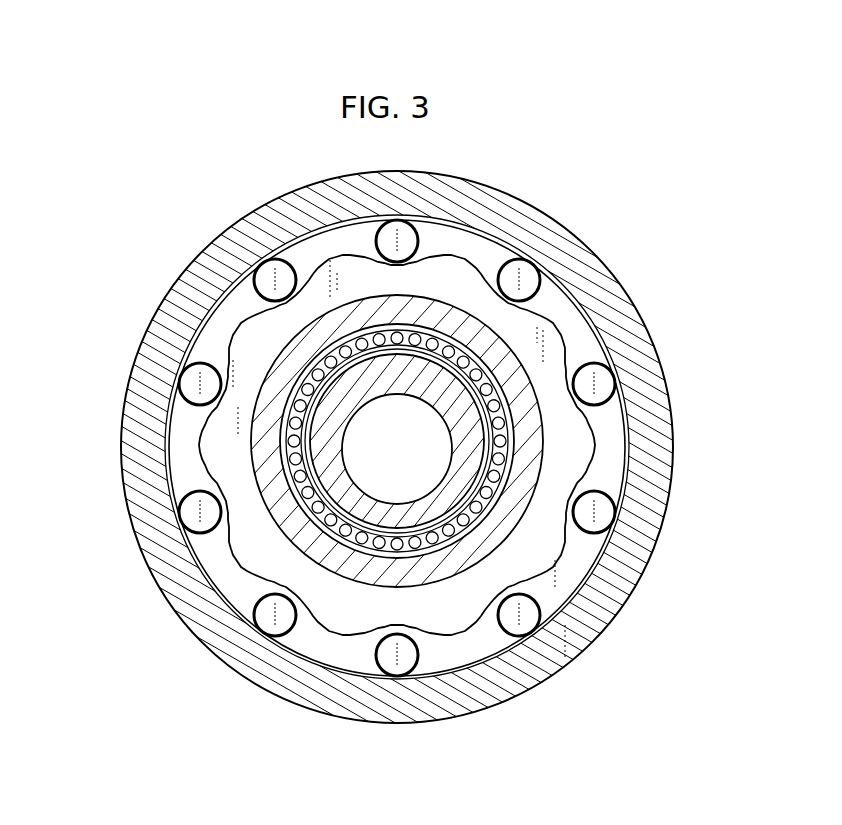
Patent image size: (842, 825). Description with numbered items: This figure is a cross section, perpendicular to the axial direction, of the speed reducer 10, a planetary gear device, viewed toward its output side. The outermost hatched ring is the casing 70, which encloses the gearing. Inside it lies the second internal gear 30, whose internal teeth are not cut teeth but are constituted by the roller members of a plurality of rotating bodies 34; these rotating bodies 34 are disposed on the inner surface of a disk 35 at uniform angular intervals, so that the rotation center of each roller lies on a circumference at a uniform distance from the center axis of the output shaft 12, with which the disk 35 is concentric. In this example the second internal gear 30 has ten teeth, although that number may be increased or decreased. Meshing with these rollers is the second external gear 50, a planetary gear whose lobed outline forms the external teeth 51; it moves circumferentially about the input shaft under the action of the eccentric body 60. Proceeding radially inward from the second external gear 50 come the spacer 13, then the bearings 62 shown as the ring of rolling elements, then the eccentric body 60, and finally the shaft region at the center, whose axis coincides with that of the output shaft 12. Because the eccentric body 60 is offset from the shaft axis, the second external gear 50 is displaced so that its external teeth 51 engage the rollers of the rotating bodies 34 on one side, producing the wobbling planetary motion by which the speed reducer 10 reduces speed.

The speed reducer 10 is at (722, 200).
The output shaft 12 is at (450, 460).
The spacer 13 is at (250, 453).
The second internal gear 30 is at (84, 217).
The rotating body 34 is at (258, 270).
The disk 35 is at (213, 310).
The second external gear 50 is at (213, 435).
The external teeth 51 is at (322, 255).
The eccentric body 60 is at (483, 435).
The bearings 62 is at (508, 418).
The casing 70 is at (123, 497).